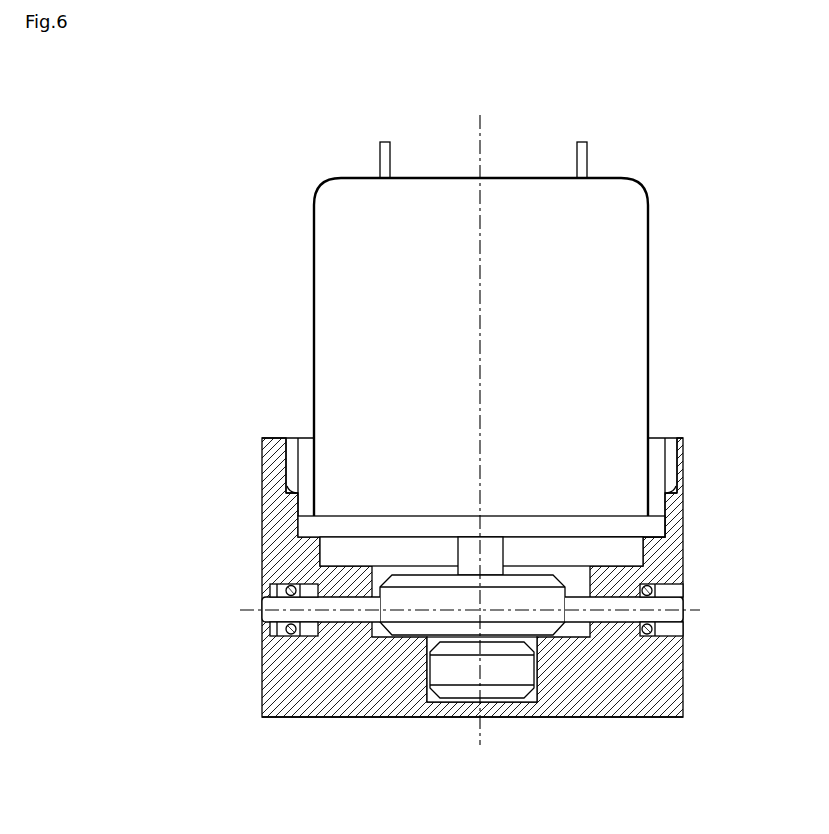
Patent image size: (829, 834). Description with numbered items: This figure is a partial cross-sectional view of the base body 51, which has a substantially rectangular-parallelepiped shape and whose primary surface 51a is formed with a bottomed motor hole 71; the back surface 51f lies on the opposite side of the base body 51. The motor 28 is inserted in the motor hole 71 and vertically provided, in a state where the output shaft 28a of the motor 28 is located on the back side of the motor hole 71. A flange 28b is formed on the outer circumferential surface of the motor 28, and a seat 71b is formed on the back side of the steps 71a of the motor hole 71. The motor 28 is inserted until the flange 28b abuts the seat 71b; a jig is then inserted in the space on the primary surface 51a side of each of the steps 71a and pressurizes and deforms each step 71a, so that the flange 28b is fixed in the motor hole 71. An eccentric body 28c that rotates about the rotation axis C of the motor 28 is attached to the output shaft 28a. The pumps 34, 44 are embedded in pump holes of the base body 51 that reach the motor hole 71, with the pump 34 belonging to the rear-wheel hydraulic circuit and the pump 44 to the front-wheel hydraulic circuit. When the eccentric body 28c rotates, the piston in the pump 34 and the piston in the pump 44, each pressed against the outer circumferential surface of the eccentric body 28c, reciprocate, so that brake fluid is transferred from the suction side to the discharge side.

The motor 28 is at (353, 197).
The output shaft 28a is at (472, 562).
The flange 28b is at (305, 527).
The eccentric body 28c is at (538, 607).
The pump 34 is at (672, 617).
The pump 44 is at (273, 618).
The base body 51 is at (332, 703).
The primary surface 51a is at (278, 437).
The back surface 51f is at (641, 718).
The motor hole 71 is at (303, 453).
The step 71a is at (290, 491).
The seat 71b is at (653, 537).
The rotation axis of motor C is at (478, 133).